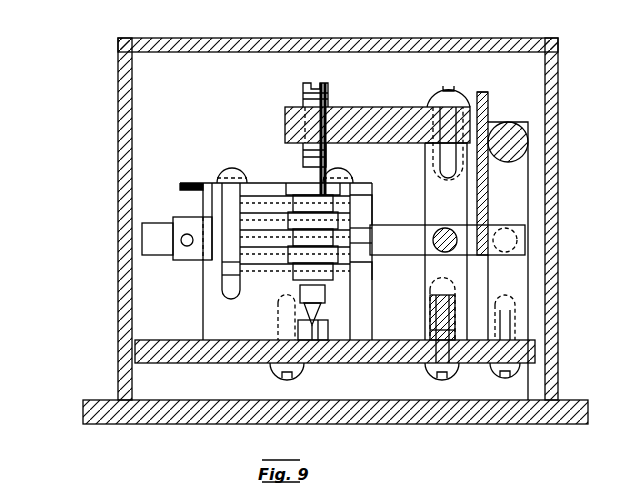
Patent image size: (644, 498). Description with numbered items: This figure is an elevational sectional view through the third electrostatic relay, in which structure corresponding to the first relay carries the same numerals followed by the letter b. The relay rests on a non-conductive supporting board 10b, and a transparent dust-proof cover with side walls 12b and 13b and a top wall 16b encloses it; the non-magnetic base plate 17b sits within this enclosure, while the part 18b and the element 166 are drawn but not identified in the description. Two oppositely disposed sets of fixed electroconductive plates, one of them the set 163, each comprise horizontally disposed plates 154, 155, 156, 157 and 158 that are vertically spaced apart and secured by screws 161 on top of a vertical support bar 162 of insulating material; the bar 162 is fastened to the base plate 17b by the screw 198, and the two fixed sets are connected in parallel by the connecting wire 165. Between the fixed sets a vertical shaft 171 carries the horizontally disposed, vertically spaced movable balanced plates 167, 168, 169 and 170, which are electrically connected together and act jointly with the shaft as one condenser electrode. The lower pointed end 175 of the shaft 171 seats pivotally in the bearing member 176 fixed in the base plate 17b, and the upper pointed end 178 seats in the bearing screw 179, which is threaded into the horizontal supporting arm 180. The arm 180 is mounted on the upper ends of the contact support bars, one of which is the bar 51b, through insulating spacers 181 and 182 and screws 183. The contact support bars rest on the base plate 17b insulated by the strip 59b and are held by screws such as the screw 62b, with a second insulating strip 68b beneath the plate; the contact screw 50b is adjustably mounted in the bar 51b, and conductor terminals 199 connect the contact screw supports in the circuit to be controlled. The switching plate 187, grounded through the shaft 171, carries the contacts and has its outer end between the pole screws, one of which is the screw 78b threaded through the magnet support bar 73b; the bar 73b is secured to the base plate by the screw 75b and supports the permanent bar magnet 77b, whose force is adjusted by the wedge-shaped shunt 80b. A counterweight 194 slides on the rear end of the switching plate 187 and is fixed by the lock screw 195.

The supporting board 10b is at (90, 410).
The side wall 12b is at (118, 192).
The side wall 13b is at (558, 162).
The top wall 16b is at (360, 38).
The base plate 17b is at (186, 340).
The base plate 18b is at (178, 405).
The contact screw 50b is at (437, 230).
The contact support bar 51b is at (425, 288).
The strip of insulating material 59b is at (422, 332).
The screw 62b is at (445, 410).
The second strip of insulating material 68b is at (425, 370).
The magnet support bar 73b is at (523, 207).
The screw 75b is at (490, 378).
The permanent bar magnet 77b is at (528, 136).
The pole screw 78b is at (533, 238).
The magnetic variable metal shunt 80b is at (488, 93).
The fixed electroconductive plate 154 is at (366, 205).
The fixed electroconductive plate 155 is at (366, 232).
The fixed electroconductive plate 156 is at (366, 244).
The fixed electroconductive plate 157 is at (222, 262).
The fixed electroconductive plate 158 is at (222, 280).
The screw 161 is at (238, 172).
The vertical support bar 162 is at (203, 298).
The set of fixed electro-conductive plates 163 is at (205, 182).
The connecting wire 165 is at (295, 199).
The clip 166 is at (190, 183).
The movable balanced plate 167 is at (295, 216).
The movable balanced plate 168 is at (295, 233).
The movable balanced plate 169 is at (295, 250).
The movable balanced plate 170 is at (295, 268).
The shaft 171 is at (300, 186).
The pointed end 175 is at (318, 312).
The bearing member 176 is at (320, 326).
The pointed end 178 is at (310, 175).
The bearing screw 179 is at (326, 96).
The horizontal supporting arm 180 is at (370, 112).
The insulating washer 181 is at (430, 147).
The insulating washer 182 is at (477, 95).
The screw 183 is at (452, 82).
The switching plate 187 is at (376, 292).
The counterweight 194 is at (527, 252).
The lock screw 195 is at (181, 240).
The screw 198 is at (270, 370).
The conductor terminal 199 is at (422, 370).